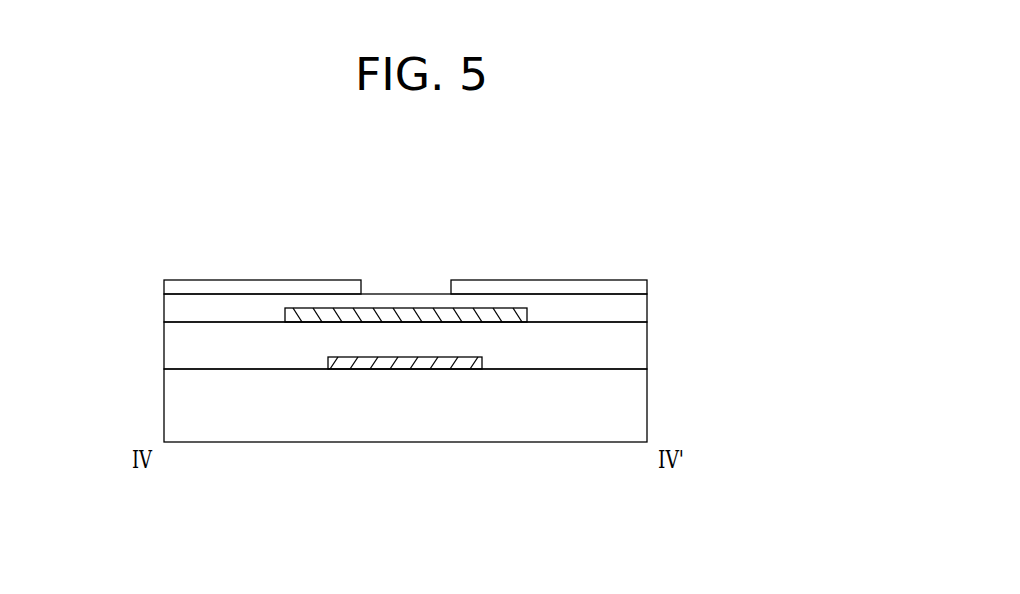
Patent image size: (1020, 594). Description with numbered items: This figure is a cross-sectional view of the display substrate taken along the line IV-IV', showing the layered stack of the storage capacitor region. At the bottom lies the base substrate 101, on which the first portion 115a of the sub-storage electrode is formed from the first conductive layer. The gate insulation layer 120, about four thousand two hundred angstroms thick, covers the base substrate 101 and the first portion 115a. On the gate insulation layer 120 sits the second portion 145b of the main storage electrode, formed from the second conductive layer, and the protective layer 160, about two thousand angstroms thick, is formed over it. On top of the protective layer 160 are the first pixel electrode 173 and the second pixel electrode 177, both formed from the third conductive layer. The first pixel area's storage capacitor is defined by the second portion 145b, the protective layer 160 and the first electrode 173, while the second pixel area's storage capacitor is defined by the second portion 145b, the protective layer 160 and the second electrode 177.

The base substrate 101 is at (647, 412).
The gate insulation layer 120 is at (647, 343).
The protective layer 160 is at (647, 317).
The first pixel electrode 173 is at (166, 284).
The second pixel electrode 177 is at (647, 282).
The second portion of the main storage electrode 145b is at (502, 322).
The first portion of the sub-storage electrode 115a is at (400, 369).